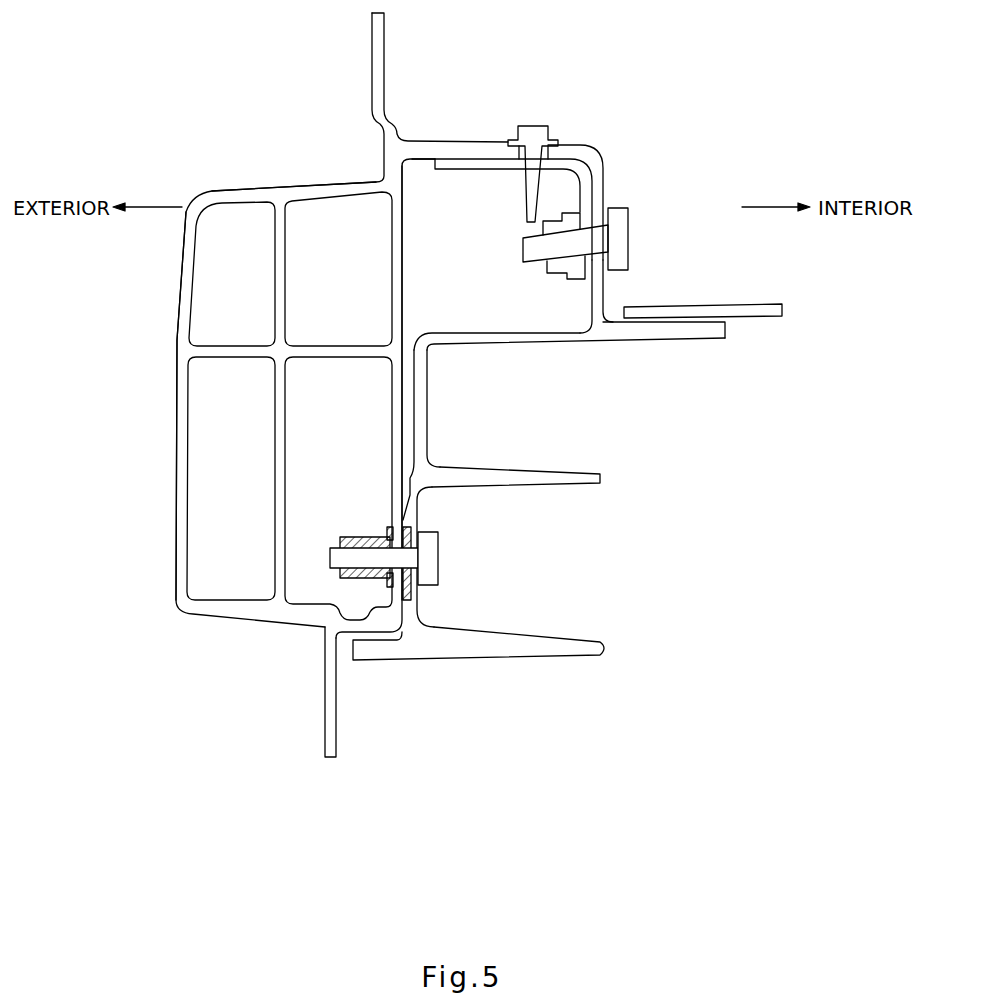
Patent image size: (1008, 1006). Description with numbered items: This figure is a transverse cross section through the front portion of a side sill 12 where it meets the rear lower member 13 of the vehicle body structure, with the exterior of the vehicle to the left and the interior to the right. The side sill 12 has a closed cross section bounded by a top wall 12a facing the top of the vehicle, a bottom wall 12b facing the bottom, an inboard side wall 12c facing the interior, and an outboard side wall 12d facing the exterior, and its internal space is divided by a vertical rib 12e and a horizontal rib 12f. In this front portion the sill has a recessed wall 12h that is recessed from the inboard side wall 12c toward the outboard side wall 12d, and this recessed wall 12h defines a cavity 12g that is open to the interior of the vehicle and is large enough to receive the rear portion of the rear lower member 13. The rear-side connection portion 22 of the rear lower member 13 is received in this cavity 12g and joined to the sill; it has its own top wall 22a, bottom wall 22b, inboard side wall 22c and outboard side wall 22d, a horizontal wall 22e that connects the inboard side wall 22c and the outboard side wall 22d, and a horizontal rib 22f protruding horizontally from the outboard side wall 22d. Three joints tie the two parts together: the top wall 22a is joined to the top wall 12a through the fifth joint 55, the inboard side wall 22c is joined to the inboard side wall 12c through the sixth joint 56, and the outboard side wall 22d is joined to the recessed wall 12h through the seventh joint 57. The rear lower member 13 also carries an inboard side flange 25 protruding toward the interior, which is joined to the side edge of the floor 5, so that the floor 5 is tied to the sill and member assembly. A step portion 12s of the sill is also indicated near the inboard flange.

The floor 5 is at (760, 305).
The side sill 12 is at (148, 411).
The top wall 12a is at (327, 180).
The bottom wall 12b is at (258, 625).
The inboard side wall 12c is at (607, 180).
The outboard side wall 12d is at (176, 465).
The vertical rib 12e is at (275, 458).
The horizontal rib 12f is at (229, 358).
The cavity 12g is at (476, 284).
The recessed wall 12h is at (392, 425).
The step portion of frame 12s is at (727, 332).
The rear lower member 13 is at (541, 435).
The rear-side connection portion 22 is at (541, 435).
The top wall 22a is at (468, 170).
The bottom wall 22b is at (493, 657).
The inboard side wall 22c is at (593, 290).
The outboard side wall 22d is at (428, 400).
The horizontal wall 22e is at (520, 347).
The horizontal rib 22f is at (548, 486).
The inboard side flange 25 is at (668, 340).
The fifth joint 55 is at (540, 125).
The sixth joint 56 is at (630, 233).
The seventh joint 57 is at (440, 555).